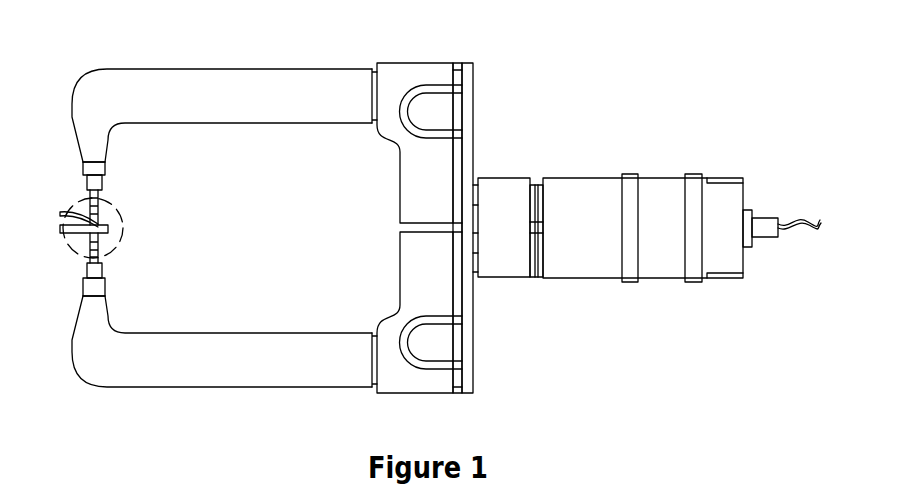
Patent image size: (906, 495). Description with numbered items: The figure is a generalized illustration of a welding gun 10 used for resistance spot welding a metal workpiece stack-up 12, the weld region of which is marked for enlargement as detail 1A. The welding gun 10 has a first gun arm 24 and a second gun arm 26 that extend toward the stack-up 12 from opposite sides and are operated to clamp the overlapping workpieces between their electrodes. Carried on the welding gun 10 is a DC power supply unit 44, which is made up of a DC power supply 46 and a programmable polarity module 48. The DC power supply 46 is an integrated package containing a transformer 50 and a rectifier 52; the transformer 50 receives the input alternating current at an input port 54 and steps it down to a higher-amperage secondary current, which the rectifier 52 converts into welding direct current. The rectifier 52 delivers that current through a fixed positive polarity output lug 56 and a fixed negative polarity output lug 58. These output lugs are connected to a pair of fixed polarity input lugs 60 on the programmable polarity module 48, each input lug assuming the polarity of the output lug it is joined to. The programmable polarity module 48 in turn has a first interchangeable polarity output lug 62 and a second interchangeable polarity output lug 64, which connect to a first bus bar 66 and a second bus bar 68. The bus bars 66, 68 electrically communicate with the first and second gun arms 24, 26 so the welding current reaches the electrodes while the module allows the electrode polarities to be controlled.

The welding gun 10 is at (404, 196).
The metal workpiece stack-up 12 is at (106, 240).
The detail area 1A is at (115, 210).
The first gun arm 24 is at (224, 95).
The second gun arm 26 is at (227, 373).
The DC power supply unit 44 is at (647, 195).
The DC power supply 46 is at (643, 223).
The programmable polarity module 48 is at (509, 225).
The transformer 50 is at (665, 265).
The rectifier 52 is at (605, 265).
The input port 54 is at (757, 243).
The fixed positive polarity output lug 56 is at (543, 200).
The fixed negative polarity output lug 58 is at (543, 257).
The fixed polarity input lugs 60 is at (543, 228).
The first interchangeable polarity output lug 62 is at (478, 205).
The second interchangeable polarity output lug 64 is at (478, 252).
The first bus bar 66 is at (468, 162).
The second bus bar 68 is at (468, 280).